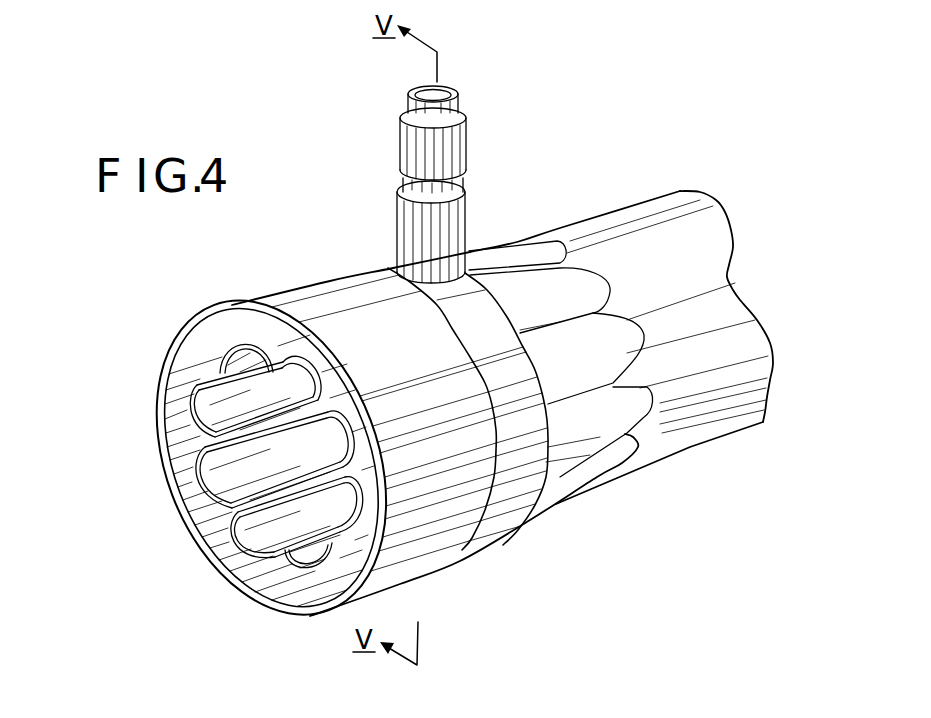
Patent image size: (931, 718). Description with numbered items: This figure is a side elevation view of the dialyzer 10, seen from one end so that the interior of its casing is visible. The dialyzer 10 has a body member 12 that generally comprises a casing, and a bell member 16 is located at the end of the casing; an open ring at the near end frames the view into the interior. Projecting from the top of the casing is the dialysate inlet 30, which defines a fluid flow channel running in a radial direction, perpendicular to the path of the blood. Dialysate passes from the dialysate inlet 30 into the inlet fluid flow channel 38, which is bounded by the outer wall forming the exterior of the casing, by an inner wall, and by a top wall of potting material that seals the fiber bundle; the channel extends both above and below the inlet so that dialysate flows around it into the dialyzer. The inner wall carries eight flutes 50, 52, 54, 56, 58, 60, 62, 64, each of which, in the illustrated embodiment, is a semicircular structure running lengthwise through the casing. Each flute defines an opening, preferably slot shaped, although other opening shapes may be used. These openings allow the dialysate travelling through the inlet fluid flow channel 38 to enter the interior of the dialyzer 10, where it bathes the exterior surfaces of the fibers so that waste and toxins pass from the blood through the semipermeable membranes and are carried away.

The dialyzer 10 is at (634, 178).
The body member 12 is at (720, 415).
The bell member 16 is at (517, 487).
The dialysate inlet 30 is at (474, 207).
The inlet fluid flow channel 38 is at (247, 322).
The flute 50 is at (360, 440).
The flute 52 is at (363, 507).
The flute 54 is at (285, 598).
The flute 56 is at (242, 553).
The flute 58 is at (203, 502).
The flute 60 is at (200, 393).
The flute 62 is at (247, 347).
The flute 64 is at (303, 353).